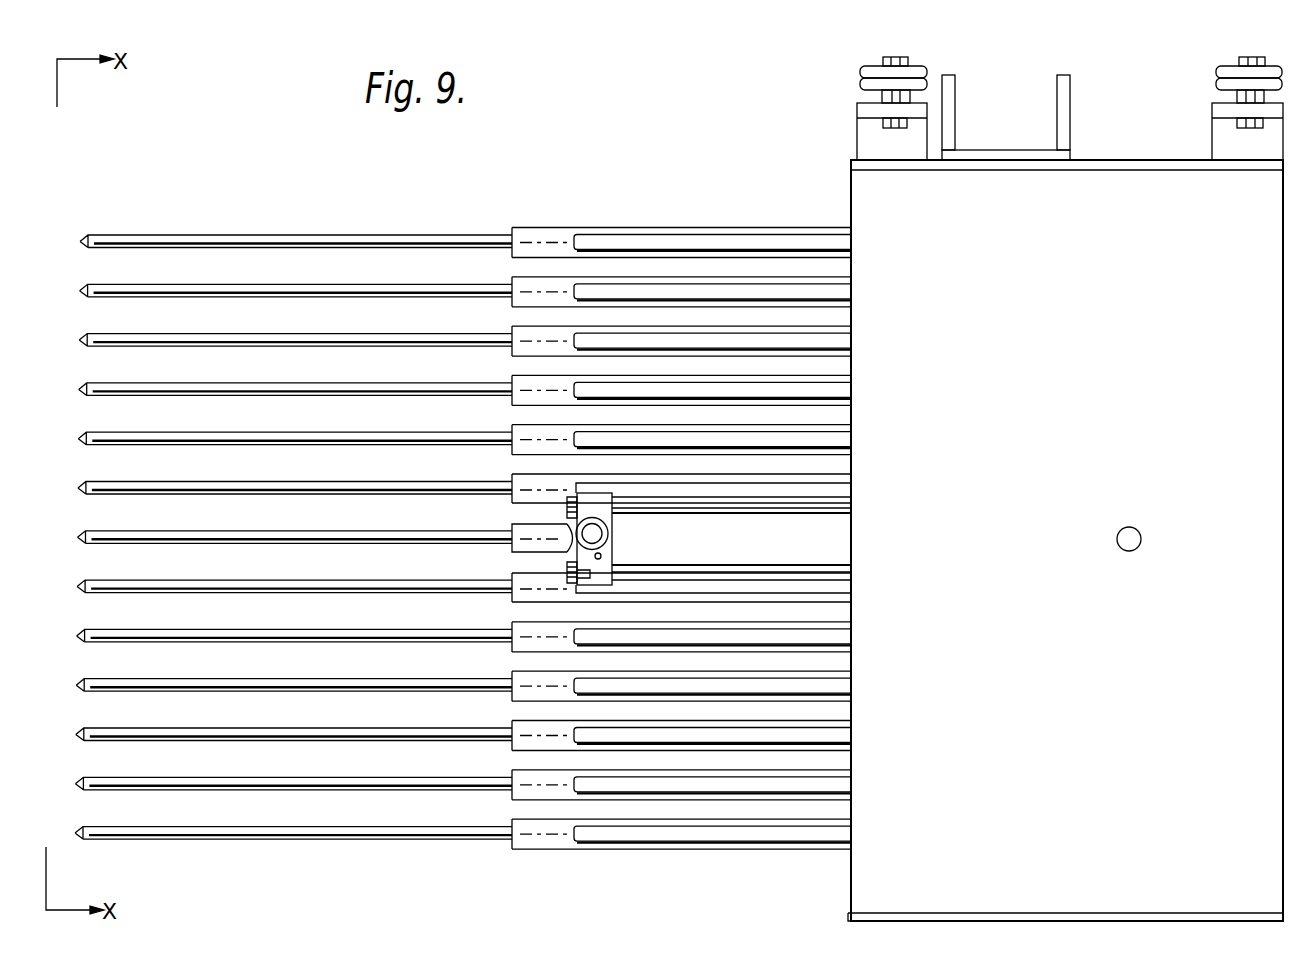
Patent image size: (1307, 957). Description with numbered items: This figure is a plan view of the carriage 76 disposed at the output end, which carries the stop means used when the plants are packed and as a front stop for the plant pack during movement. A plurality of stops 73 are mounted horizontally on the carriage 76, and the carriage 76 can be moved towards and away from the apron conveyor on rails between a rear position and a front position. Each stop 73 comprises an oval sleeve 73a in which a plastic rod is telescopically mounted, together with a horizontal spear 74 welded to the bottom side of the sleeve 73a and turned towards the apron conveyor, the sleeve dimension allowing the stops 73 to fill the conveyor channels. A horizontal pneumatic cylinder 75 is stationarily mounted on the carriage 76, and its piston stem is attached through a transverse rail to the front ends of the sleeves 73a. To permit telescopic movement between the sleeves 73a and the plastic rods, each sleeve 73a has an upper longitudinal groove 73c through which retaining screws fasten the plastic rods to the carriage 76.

The stop 73 is at (681, 501).
The oval sleeve 73a is at (604, 228).
The upper longitudinal groove 73c is at (742, 245).
The horizontal spear 74 is at (403, 241).
The horizontal pneumatic cylinder 75 is at (737, 553).
The carriage 76 is at (1168, 195).